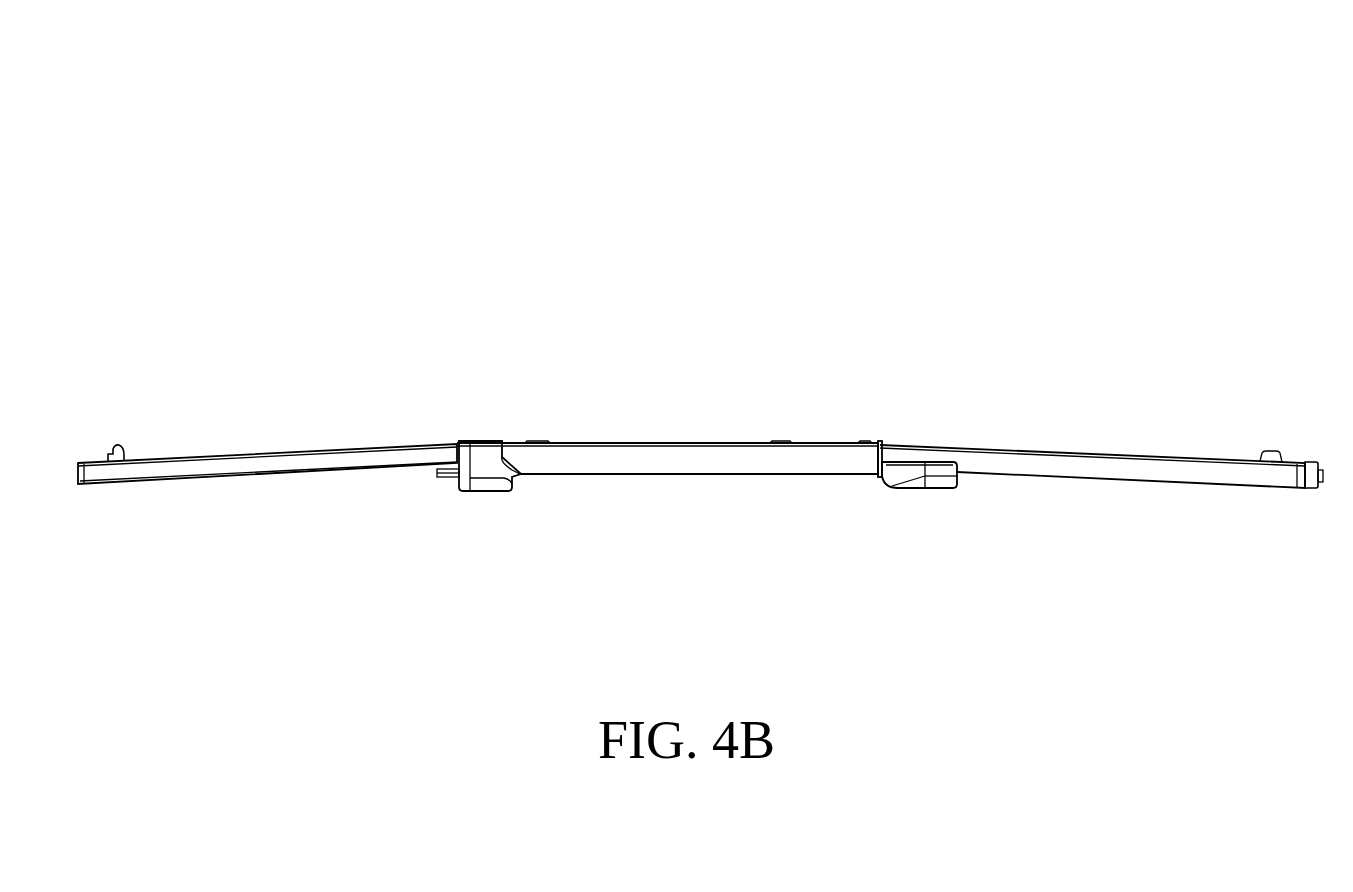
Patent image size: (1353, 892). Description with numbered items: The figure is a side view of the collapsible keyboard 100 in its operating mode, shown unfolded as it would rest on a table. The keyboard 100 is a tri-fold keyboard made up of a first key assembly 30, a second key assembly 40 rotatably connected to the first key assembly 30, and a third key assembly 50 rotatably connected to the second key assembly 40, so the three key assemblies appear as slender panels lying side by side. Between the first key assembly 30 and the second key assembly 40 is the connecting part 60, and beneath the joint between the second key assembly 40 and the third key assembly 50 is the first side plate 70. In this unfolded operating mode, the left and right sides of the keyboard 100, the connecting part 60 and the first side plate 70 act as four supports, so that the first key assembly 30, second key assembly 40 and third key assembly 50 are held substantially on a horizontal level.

The collapsible keyboard 100 is at (118, 114).
The first key assembly 30 is at (278, 460).
The second key assembly 40 is at (695, 463).
The third key assembly 50 is at (1127, 472).
The connecting part 60 is at (488, 458).
The first side plate 70 is at (940, 488).